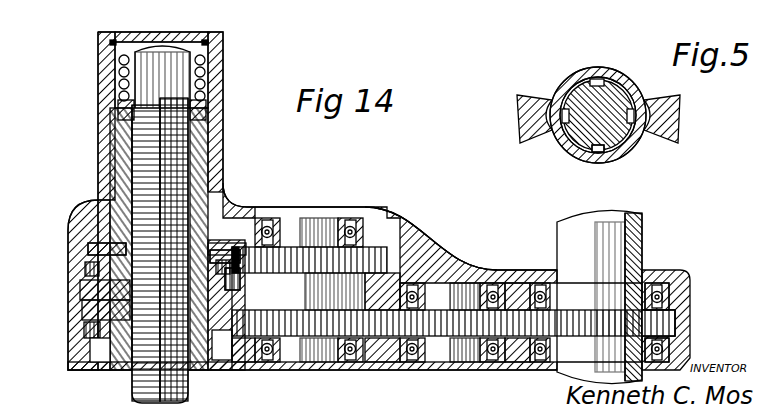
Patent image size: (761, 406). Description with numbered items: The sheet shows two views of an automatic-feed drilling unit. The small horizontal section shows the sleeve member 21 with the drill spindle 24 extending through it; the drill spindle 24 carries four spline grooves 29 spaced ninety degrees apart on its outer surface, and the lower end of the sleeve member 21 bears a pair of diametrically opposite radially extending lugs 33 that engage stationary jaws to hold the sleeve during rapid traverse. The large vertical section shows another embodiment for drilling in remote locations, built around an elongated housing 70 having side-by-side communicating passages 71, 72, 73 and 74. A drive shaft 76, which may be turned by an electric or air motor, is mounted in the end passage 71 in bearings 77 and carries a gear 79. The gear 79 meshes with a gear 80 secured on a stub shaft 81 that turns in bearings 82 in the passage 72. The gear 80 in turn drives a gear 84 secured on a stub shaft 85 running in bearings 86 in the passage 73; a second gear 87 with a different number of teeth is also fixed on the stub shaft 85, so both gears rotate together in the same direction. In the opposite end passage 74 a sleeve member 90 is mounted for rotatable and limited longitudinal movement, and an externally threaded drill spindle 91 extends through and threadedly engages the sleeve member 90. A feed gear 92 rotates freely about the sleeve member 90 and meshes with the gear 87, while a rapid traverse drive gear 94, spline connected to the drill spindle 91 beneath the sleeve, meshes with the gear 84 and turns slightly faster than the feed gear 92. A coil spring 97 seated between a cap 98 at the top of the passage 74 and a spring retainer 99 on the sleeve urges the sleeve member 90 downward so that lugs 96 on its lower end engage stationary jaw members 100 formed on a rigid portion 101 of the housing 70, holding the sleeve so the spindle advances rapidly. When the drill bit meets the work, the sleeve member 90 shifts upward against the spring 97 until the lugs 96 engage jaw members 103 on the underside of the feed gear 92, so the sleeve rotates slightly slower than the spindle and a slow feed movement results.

In FIG. 14, the cap 98 is at (190, 46).
In FIG. 14, the coil spring 97 is at (207, 76).
In FIG. 14, the spring retainer 99 is at (207, 108).
In FIG. 14, the passage 74 is at (110, 122).
In FIG. 14, the sleeve member 90 is at (212, 174).
In FIG. 14, the jaw members 103 is at (114, 262).
In FIG. 14, the feed gear 92 is at (88, 247).
In FIG. 14, the lugs 96 is at (85, 270).
In FIG. 14, the stationary jaw members 100 is at (80, 287).
In FIG. 14, the rigid portion 101 is at (82, 306).
In FIG. 14, the drive gear 94 is at (84, 325).
In FIG. 14, the drill spindle 91 is at (131, 392).
In FIG. 14, the stub shaft 85 is at (325, 246).
In FIG. 14, the gear 87 is at (297, 245).
In FIG. 14, the bearings 86 is at (362, 230).
In FIG. 14, the gear 84 is at (308, 336).
In FIG. 14, the passage 73 is at (393, 236).
In FIG. 14, the housing 70 is at (415, 262).
In FIG. 14, the bearings 82 is at (424, 284).
In FIG. 14, the stub shaft 81 is at (467, 284).
In FIG. 14, the passage 72 is at (516, 282).
In FIG. 14, the gear 80 is at (462, 318).
In FIG. 14, the gear 79 is at (675, 323).
In FIG. 14, the drive shaft 76 is at (643, 235).
In FIG. 14, the passage 71 is at (690, 300).
In FIG. 14, the bearings 77 is at (665, 290).
In FIG. 5, the lugs 33 is at (517, 110).
In FIG. 5, the drill spindle 24 is at (578, 100).
In FIG. 5, the sleeve member 21 is at (600, 78).
In FIG. 5, the spline grooves 29 is at (580, 164).